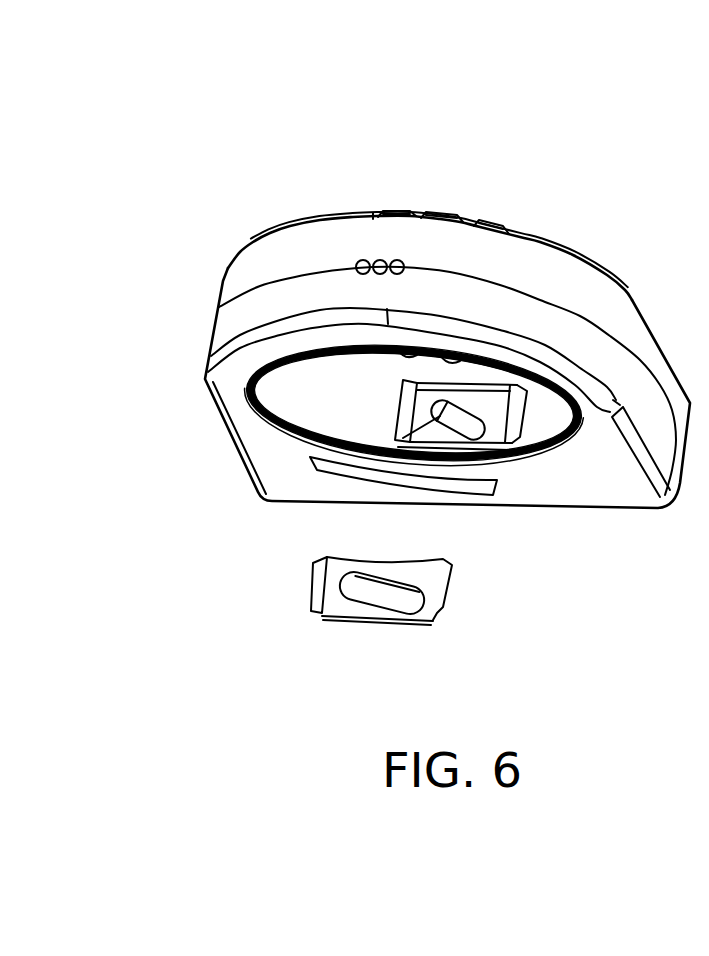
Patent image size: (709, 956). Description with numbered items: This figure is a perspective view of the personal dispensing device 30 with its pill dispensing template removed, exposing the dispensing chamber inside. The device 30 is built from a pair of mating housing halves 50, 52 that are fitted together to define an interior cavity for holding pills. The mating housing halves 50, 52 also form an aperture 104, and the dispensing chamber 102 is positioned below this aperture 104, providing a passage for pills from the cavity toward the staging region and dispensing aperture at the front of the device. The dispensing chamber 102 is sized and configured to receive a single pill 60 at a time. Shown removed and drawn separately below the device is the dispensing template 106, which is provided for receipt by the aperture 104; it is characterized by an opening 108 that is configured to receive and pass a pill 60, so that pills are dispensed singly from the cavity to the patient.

The personal dispensing device 30 is at (294, 165).
The housing half 52 is at (243, 272).
The housing half 50 is at (230, 327).
The pill 60 is at (457, 400).
The dispensing chamber 102 is at (518, 432).
The aperture 104 is at (398, 406).
The dispensing template 106 is at (345, 583).
The opening 108 is at (408, 600).